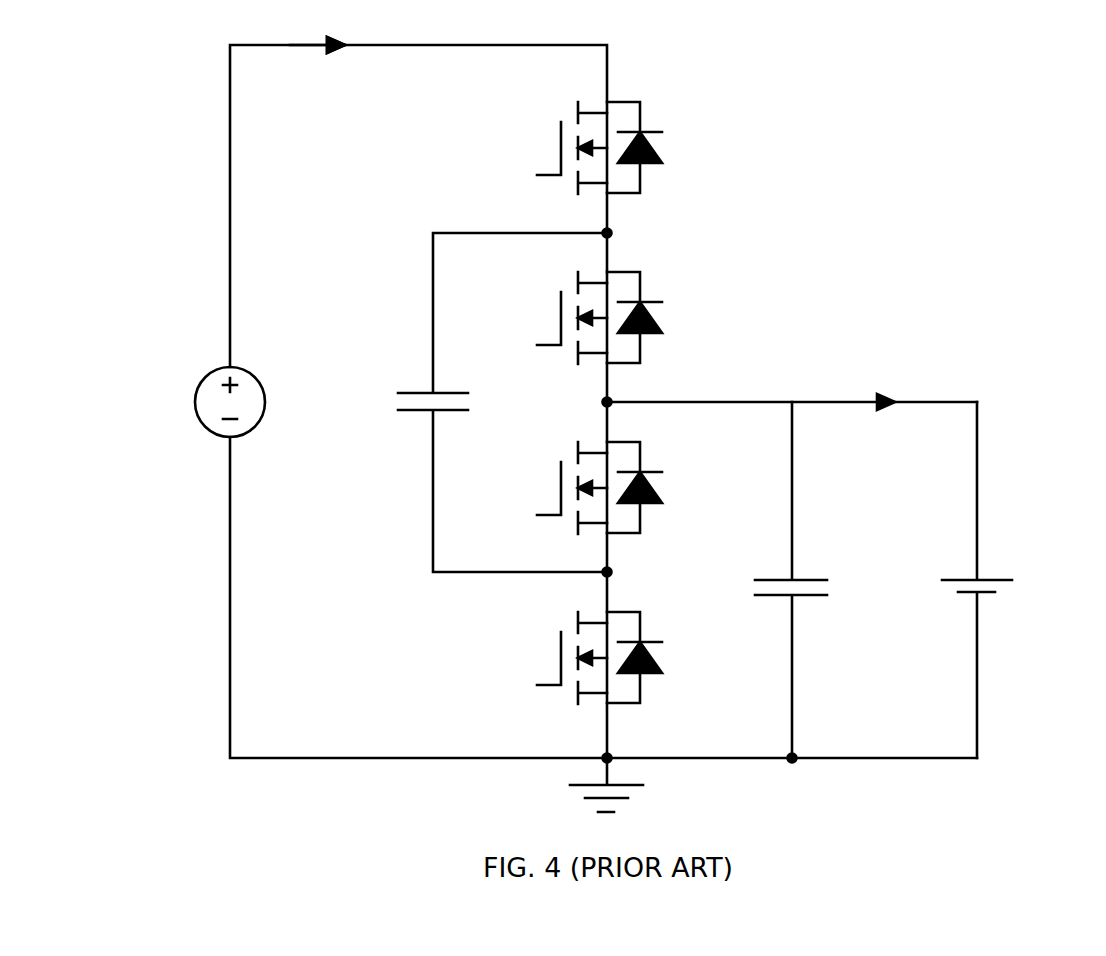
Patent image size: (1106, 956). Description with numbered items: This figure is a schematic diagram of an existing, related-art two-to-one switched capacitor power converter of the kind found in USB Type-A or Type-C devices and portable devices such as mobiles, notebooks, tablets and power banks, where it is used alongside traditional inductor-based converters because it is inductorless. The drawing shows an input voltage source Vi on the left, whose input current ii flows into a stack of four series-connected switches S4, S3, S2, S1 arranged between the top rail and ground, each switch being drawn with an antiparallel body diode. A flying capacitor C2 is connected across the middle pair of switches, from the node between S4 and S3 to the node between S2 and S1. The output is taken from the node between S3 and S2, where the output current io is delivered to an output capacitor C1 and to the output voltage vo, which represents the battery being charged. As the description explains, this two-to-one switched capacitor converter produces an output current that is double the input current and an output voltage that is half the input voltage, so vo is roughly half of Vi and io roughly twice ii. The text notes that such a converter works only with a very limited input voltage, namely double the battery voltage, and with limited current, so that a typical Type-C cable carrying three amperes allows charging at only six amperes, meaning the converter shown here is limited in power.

The switch S1 (MOSFET with body diode) S1 is at (583, 658).
The switch S2 (MOSFET with body diode) S2 is at (583, 488).
The switch S3 (MOSFET with body diode) S3 is at (583, 318).
The switch S4 (MOSFET with body diode) S4 is at (583, 148).
The output capacitor C1 is at (777, 580).
The flying capacitor C2 is at (488, 402).
The input voltage source Vi is at (215, 382).
The output voltage vo (battery/load) vo is at (1007, 580).
The input current ii is at (318, 26).
The output current io is at (792, 385).